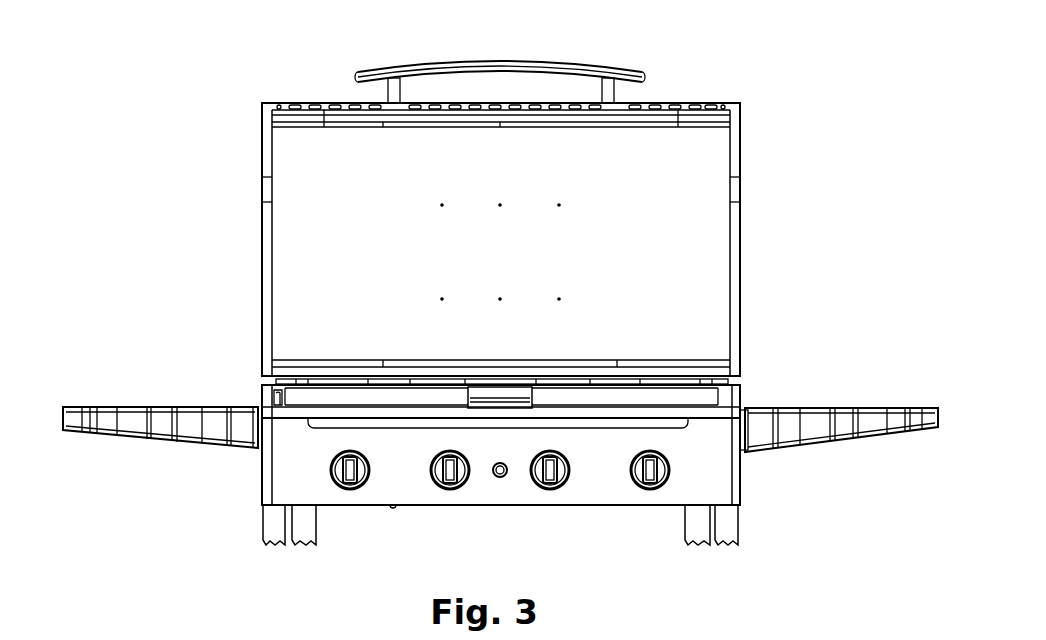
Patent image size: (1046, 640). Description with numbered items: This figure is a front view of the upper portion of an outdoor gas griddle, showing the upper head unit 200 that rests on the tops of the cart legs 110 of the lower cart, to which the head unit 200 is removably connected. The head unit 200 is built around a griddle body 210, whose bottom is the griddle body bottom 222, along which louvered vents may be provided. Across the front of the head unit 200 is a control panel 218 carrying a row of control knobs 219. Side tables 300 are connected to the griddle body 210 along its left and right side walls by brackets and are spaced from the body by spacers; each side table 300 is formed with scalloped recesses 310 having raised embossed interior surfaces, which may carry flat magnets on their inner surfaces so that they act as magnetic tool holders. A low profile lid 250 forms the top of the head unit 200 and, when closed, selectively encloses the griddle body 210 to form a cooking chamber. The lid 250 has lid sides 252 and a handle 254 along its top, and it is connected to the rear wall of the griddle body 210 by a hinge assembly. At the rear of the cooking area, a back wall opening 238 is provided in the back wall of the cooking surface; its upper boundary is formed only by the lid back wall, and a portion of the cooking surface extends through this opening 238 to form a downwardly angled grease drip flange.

The cart legs 110 is at (752, 528).
The upper head unit 200 is at (205, 507).
The griddle body 210 is at (279, 458).
The control panel 218 is at (596, 486).
The control knobs 219 is at (440, 490).
The griddle body bottom 222 is at (539, 513).
The back wall opening 238 is at (507, 388).
The low profile lid 250 is at (478, 247).
The lid sides 252 is at (250, 241).
The handle 254 is at (563, 57).
The side tables 300 is at (936, 421).
The scalloped recesses 310 is at (786, 418).